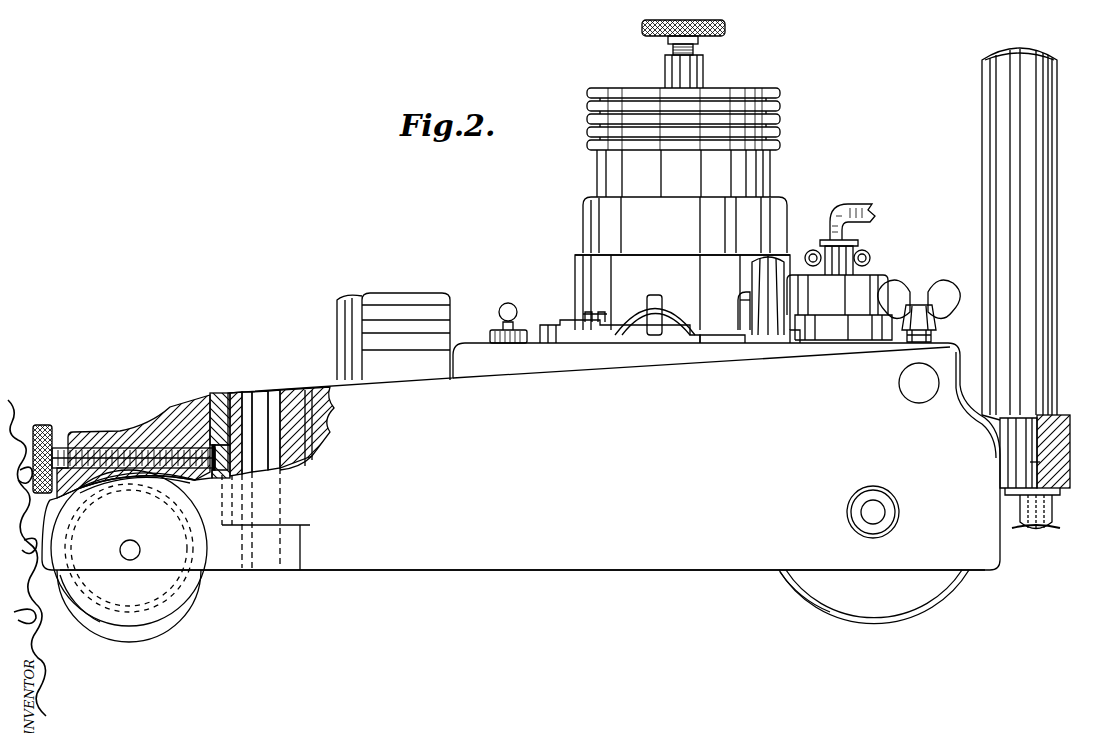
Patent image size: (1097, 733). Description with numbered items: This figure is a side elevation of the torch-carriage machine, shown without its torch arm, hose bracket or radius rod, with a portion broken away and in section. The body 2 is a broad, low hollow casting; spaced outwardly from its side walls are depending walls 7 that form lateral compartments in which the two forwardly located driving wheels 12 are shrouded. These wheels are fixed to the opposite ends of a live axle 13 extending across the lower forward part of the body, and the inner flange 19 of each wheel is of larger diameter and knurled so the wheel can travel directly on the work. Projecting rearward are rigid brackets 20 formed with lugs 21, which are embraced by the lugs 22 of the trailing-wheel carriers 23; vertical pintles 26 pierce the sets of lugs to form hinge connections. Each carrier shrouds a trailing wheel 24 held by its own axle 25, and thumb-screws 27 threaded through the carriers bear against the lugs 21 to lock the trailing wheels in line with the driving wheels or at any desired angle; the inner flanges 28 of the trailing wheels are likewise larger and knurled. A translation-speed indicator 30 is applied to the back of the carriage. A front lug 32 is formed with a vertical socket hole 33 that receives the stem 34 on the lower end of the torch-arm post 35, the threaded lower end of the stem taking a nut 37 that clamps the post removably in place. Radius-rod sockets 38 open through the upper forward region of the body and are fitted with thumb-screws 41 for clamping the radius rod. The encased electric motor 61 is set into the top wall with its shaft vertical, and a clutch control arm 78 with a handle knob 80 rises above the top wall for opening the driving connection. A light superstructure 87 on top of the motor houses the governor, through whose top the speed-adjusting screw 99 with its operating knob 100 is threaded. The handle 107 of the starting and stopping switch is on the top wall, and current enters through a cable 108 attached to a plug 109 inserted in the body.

The body 2 is at (576, 574).
The depending walls 7 is at (521, 456).
The driving wheels 12 is at (860, 630).
The live axle 13 is at (880, 516).
The inner flange 19 is at (800, 600).
The rigid brackets 20 is at (322, 386).
The lugs 21 is at (211, 440).
The lugs 22 is at (241, 390).
The trailing-wheel carriers 23 is at (156, 425).
The trailing wheels 24 is at (158, 620).
The axle 25 is at (128, 562).
The vertical pintles 26 is at (292, 462).
The thumb-screws 27 is at (84, 448).
The inner flanges 28 is at (112, 630).
The translation-speed indicator 30 is at (398, 292).
The front lugs 32 is at (1060, 416).
The vertical socket hole 33 is at (1038, 463).
The stem 34 is at (1012, 440).
The torch-arm post 35 is at (1050, 272).
The nut 37 is at (1046, 532).
The radius-rod sockets 38 is at (914, 400).
The thumb-screws 41 is at (934, 336).
The electric motor 61 is at (586, 217).
The clutch control arm 78 is at (743, 326).
The handle knob 80 is at (784, 256).
The superstructure 87 is at (784, 114).
The speed-adjusting screw 99 is at (698, 52).
The operating knob 100 is at (727, 28).
The handle 107 is at (505, 303).
The cable 108 is at (852, 204).
The plug 109 is at (872, 283).